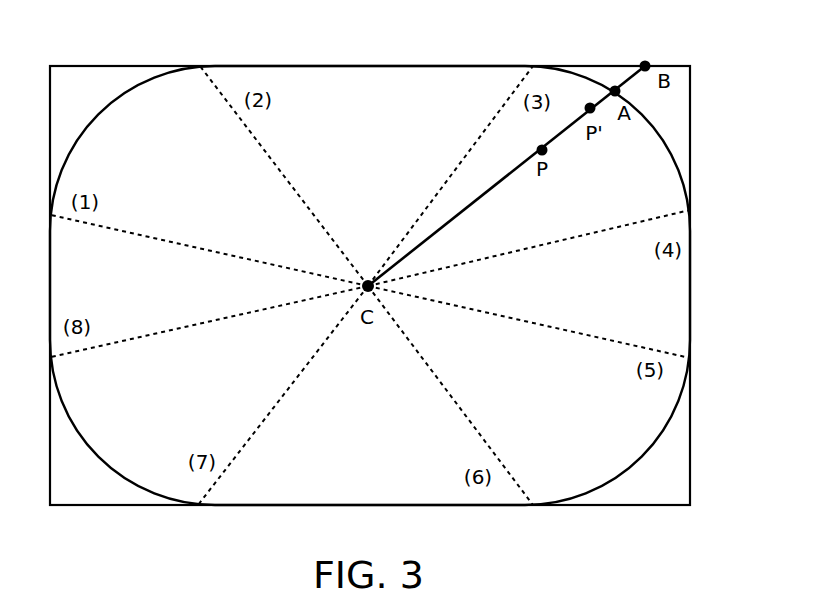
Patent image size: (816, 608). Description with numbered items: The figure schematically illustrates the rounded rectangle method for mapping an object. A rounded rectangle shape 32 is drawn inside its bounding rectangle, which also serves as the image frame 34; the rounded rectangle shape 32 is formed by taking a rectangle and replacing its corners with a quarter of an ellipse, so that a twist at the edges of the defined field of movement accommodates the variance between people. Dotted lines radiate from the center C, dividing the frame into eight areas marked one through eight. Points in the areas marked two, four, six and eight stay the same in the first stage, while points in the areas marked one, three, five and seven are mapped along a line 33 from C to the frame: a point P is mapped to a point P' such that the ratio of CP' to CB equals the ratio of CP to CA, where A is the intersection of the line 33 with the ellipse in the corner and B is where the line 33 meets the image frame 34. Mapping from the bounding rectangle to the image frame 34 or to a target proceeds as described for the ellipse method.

The rounded rectangle shape 32 is at (681, 161).
The line 33 is at (470, 202).
The image frame 34 is at (97, 66).